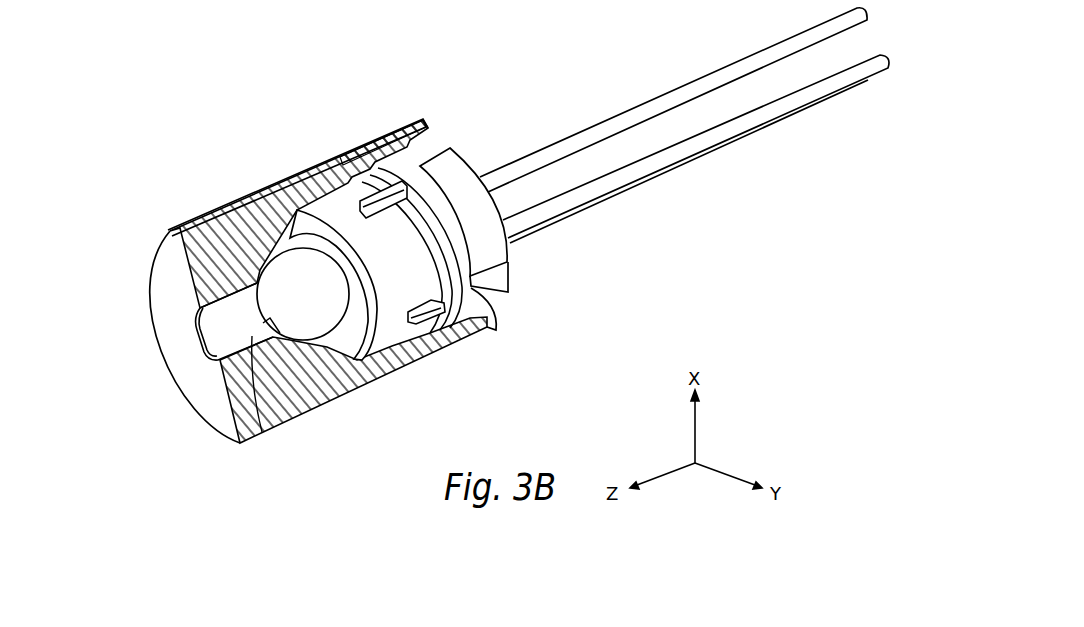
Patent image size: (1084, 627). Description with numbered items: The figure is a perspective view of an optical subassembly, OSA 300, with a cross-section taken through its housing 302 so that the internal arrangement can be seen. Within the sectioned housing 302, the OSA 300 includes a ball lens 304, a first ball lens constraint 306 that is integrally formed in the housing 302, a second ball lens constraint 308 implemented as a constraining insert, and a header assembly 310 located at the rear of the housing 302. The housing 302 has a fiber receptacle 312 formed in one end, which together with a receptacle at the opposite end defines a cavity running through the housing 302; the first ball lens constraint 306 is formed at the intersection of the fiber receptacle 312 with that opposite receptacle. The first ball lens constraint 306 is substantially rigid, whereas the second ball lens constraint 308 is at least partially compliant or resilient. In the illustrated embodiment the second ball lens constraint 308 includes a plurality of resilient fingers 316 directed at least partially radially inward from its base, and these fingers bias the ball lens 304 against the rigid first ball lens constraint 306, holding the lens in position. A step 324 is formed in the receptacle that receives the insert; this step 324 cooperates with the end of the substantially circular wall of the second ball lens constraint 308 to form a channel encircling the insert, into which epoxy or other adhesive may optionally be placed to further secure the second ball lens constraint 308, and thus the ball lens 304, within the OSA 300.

The OSA 300 is at (282, 104).
The housing 302 is at (382, 133).
The ball lens 304 is at (303, 330).
The first ball lens constraint 306 is at (239, 438).
The second ball lens constraint 308 is at (393, 322).
The header assembly 310 is at (497, 312).
The fiber receptacle 312 is at (214, 332).
The resilient fingers 316 is at (374, 396).
The step 324 is at (436, 148).